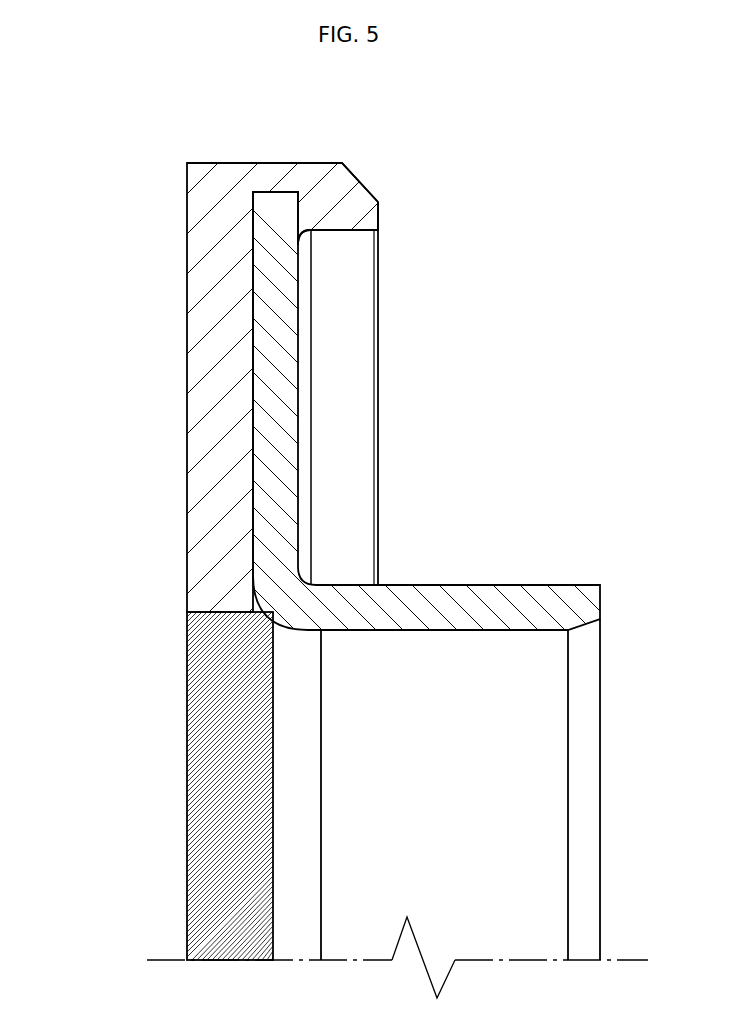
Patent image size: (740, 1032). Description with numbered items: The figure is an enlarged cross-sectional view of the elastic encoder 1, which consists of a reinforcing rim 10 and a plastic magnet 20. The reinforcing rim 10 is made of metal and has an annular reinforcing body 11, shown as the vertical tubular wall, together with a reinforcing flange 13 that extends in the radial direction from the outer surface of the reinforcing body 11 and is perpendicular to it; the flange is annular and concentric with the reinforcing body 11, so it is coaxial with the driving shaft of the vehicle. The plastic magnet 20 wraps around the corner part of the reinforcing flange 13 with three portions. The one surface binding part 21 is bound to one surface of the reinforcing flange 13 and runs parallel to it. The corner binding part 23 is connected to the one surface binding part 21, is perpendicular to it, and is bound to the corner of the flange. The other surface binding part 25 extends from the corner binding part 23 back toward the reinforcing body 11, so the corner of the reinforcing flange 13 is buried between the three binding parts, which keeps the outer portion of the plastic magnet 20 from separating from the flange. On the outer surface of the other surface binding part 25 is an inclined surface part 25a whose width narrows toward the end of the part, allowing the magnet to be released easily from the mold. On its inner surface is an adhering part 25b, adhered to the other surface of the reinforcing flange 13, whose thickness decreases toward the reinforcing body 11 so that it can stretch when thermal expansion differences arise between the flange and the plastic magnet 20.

The elastic encoder 1 is at (612, 151).
The reinforcing rim 10 is at (470, 363).
The reinforcing body 11 is at (440, 603).
The reinforcing flange 13 is at (280, 378).
The plastic magnet 20 is at (176, 346).
The one surface binding part 21 is at (208, 262).
The corner binding part 23 is at (272, 163).
The other surface binding part 25 is at (337, 197).
The inclined surface part 25a is at (362, 183).
The adhering part 25b is at (305, 233).